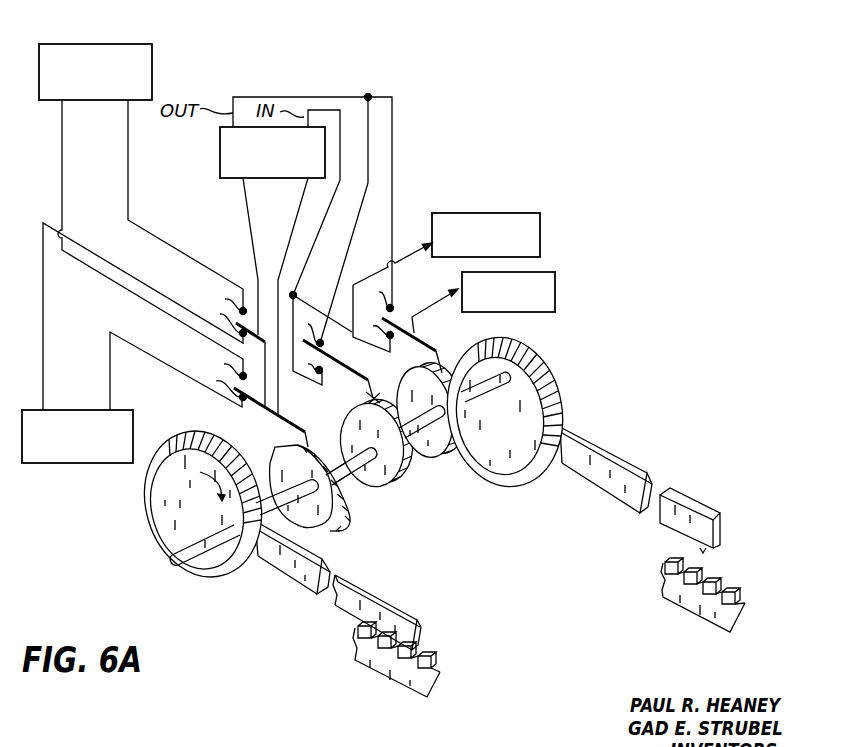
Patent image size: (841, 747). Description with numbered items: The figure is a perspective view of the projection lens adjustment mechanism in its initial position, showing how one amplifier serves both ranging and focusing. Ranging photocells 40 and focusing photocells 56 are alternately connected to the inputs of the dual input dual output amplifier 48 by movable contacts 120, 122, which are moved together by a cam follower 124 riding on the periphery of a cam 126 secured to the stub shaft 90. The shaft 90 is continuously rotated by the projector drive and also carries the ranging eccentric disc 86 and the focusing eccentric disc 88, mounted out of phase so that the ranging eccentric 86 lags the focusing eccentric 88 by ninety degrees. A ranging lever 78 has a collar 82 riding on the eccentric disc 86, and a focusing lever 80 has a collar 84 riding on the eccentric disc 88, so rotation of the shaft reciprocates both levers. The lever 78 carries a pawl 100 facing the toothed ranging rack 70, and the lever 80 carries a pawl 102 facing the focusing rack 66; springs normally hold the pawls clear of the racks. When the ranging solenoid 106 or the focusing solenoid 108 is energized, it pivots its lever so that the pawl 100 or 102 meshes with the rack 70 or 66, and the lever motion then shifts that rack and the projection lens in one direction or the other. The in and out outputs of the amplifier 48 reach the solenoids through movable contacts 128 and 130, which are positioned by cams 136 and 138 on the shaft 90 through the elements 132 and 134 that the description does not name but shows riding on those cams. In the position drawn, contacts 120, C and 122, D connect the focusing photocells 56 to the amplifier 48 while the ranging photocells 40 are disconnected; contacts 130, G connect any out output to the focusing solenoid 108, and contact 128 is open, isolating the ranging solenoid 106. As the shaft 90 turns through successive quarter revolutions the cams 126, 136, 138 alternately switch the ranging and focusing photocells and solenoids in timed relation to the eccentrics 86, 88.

The ranging photocells 40 is at (138, 43).
The dual input dual output amplifier 48 is at (224, 160).
The focusing photocells 56 is at (63, 410).
The focusing rack 66 is at (404, 672).
The ranging rack 70 is at (687, 594).
The ranging lever 78 is at (597, 475).
The focusing lever 80 is at (292, 571).
The collar 82 is at (533, 370).
The collar 84 is at (182, 432).
The ranging eccentric disc 86 is at (514, 488).
The focusing eccentric disc 88 is at (162, 502).
The stub shaft 90 is at (183, 565).
The pawl 100 is at (702, 556).
The pawl 102 is at (380, 660).
The ranging solenoid 106 is at (556, 292).
The focusing solenoid 108 is at (478, 213).
The movable contact 120 is at (255, 284).
The movable contact 122 is at (248, 405).
The cam follower 124 is at (309, 440).
The cam 126 is at (350, 527).
The movable contact 128 is at (406, 312).
The movable contact 130 is at (338, 366).
The selector cam 132 is at (446, 372).
The switch follower link 134 is at (380, 391).
The cam 136 is at (452, 453).
The cam 138 is at (410, 486).